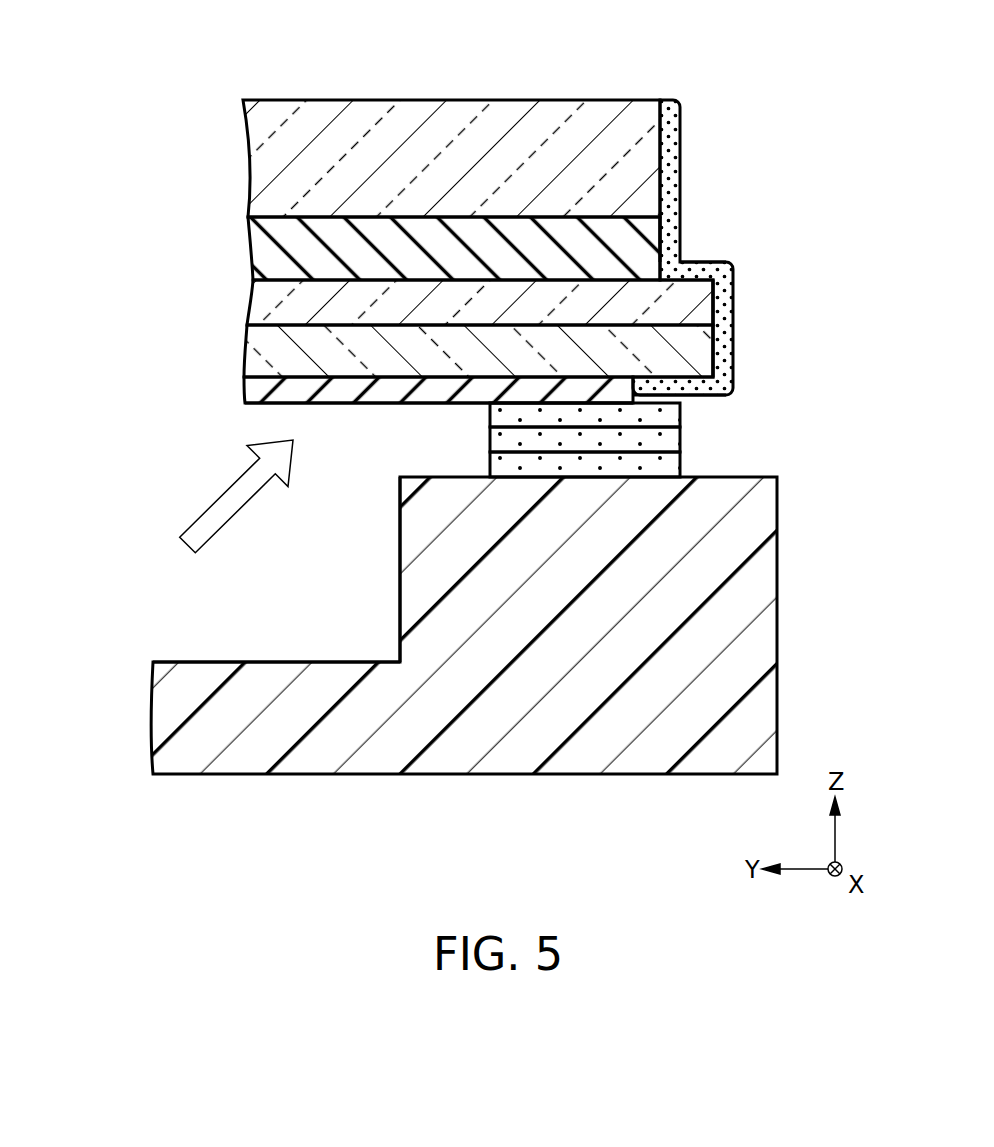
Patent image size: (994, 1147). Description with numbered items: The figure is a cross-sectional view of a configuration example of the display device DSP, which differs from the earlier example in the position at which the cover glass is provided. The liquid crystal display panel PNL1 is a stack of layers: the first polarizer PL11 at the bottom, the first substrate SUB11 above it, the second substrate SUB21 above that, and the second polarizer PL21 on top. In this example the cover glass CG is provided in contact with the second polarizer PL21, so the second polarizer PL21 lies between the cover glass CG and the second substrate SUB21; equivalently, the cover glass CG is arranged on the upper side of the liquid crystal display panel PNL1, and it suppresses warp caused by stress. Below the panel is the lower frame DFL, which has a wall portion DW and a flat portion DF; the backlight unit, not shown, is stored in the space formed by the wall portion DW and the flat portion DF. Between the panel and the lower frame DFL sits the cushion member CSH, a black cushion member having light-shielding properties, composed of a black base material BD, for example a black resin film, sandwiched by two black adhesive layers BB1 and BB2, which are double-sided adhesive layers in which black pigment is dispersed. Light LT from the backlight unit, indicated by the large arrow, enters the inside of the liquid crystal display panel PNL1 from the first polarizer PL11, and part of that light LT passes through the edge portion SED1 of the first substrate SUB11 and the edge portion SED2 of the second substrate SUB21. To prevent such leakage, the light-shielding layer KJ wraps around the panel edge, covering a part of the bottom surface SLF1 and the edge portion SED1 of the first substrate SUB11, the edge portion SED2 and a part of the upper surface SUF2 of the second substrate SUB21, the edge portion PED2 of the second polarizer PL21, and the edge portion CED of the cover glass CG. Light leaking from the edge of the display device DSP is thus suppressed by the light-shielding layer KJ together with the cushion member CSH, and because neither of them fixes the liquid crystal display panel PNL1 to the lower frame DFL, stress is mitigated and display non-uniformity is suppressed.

The display device DSP is at (770, 76).
The liquid crystal display panel PNL1 is at (378, 256).
The cover glass CG is at (263, 158).
The second polarizer PL21 is at (260, 245).
The second substrate SUB21 is at (260, 297).
The first substrate SUB11 is at (263, 355).
The first polarizer PL11 is at (391, 391).
The edge portion of the cover glass CED is at (660, 142).
The edge portion of the second polarizer PED2 is at (660, 240).
The upper surface of the second substrate SUF2 is at (695, 277).
The edge portion of the second substrate SED2 is at (717, 302).
The edge portion of the first substrate SED1 is at (717, 347).
The light-shielding layer KJ is at (727, 370).
The cushion member CSH is at (697, 437).
The black adhesive layer BB2 is at (670, 415).
The black base material BD is at (670, 440).
The black adhesive layer BB1 is at (670, 463).
The bottom surface of the first substrate SLF1 is at (440, 383).
The lower frame DFL is at (767, 590).
The wall portion DW is at (410, 545).
The flat portion DF is at (288, 662).
The light LT is at (220, 506).